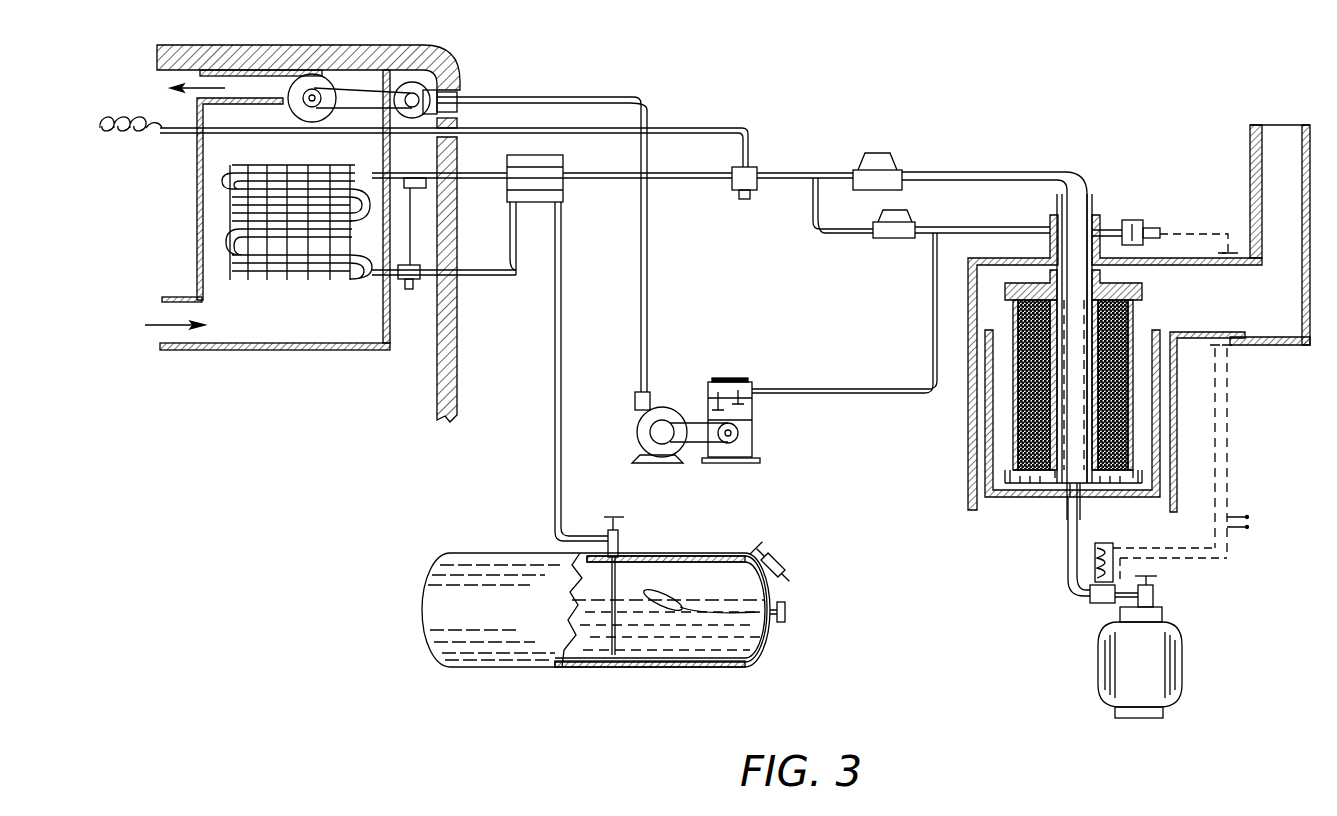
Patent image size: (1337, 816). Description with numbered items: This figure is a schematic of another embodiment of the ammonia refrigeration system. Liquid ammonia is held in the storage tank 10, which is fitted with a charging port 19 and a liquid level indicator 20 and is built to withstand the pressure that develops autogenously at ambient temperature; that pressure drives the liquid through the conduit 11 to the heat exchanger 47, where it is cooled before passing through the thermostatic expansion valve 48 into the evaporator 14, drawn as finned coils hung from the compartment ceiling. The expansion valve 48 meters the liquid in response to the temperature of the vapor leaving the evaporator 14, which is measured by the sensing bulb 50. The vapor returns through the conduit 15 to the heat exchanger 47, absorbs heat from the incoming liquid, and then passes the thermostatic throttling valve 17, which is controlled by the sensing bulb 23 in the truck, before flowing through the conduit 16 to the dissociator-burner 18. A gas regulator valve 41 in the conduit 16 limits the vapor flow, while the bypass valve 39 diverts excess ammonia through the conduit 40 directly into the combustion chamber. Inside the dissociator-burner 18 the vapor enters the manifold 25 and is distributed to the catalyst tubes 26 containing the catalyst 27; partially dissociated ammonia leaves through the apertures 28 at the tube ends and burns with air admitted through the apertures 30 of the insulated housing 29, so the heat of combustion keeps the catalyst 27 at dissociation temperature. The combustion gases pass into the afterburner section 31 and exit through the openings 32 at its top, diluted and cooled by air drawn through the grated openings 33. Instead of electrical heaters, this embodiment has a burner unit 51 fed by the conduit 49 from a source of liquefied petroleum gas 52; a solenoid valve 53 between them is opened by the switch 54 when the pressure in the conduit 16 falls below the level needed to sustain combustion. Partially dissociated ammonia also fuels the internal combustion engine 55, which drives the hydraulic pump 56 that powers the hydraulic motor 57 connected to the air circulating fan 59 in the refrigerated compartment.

The liquid ammonia storage tank 10 is at (645, 667).
The conduit 11 is at (553, 470).
The evaporator 14 is at (225, 268).
The conduit 15 is at (497, 180).
The conduit 16 is at (710, 180).
The thermostatic throttling valve 17 is at (757, 170).
The ammonia dissociator-burner 18 is at (1015, 510).
The charging port 19 is at (790, 565).
The liquid level indicator 20 is at (787, 612).
The sensing bulb 23 is at (136, 118).
The manifold 25 is at (1005, 287).
The catalyst tubes 26 is at (1017, 312).
The catalyst 27 is at (1128, 405).
The apertures 28 is at (1012, 475).
The insulated housing 29 is at (987, 375).
The apertures 30 is at (988, 432).
The afterburner section 31 is at (1235, 350).
The openings 32 is at (1280, 132).
The grated openings 33 is at (1268, 346).
The bypass valve 39 is at (870, 156).
The conduit 40 is at (1075, 188).
The gas regulator valve 41 is at (893, 238).
The heat exchanger 47 is at (565, 190).
The thermostatic expansion valve 48 is at (409, 284).
The conduit 49 is at (1068, 560).
The sensing bulb 50 is at (418, 177).
The burner unit 51 is at (1078, 492).
The source of liquefied petroleum gas 52 is at (1098, 675).
The solenoid valve 53 is at (1098, 600).
The switch 54 is at (1138, 222).
The internal combustion engine 55 is at (752, 425).
The hydraulic pump 56 is at (660, 414).
The hydraulic motor 57 is at (412, 83).
The air circulating fan 59 is at (325, 78).